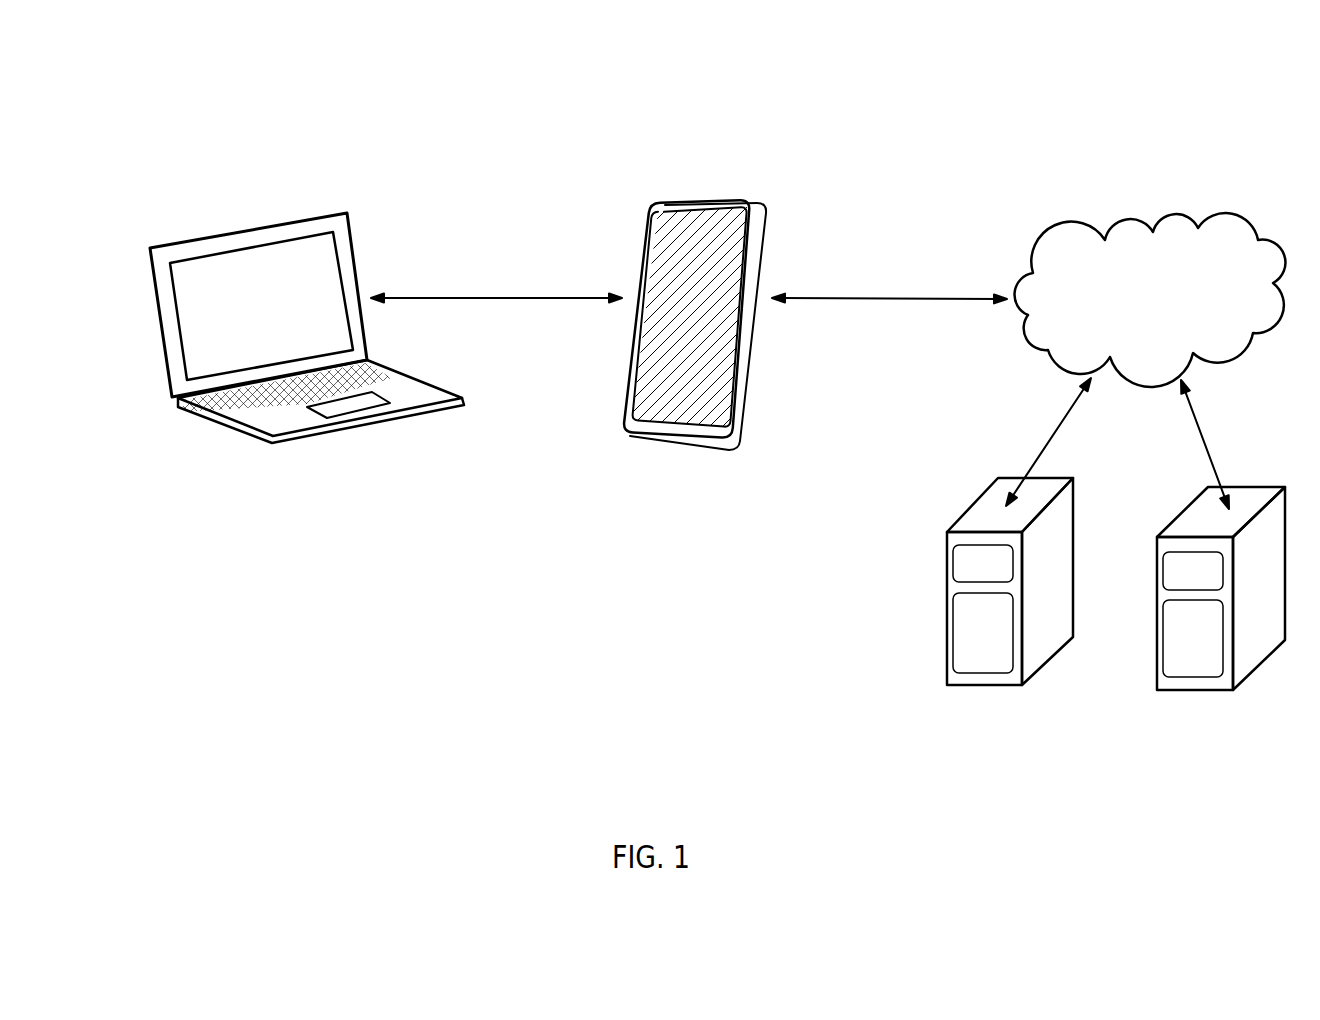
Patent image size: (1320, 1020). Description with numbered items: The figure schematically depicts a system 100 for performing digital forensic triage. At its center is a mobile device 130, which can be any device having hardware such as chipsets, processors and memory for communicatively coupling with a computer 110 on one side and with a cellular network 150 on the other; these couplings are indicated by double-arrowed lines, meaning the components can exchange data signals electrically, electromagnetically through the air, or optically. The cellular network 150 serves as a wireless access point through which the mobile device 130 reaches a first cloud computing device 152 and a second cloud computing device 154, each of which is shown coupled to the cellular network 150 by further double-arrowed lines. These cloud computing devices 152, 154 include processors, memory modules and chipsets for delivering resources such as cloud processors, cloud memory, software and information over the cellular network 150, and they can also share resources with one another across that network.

The system 100 is at (713, 95).
The computer 110 is at (295, 218).
The mobile device 130 is at (718, 197).
The cellular network 150 is at (1178, 212).
The first cloud computing device 152 is at (992, 503).
The second cloud computing device 154 is at (1248, 492).